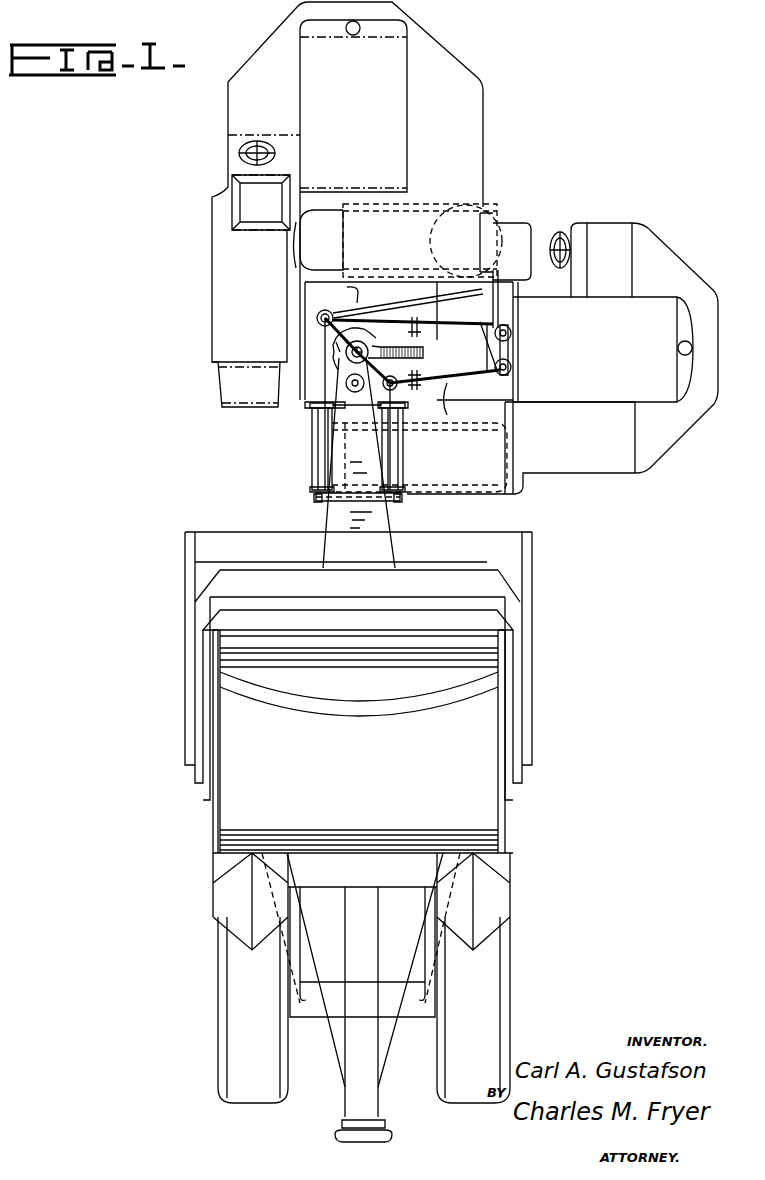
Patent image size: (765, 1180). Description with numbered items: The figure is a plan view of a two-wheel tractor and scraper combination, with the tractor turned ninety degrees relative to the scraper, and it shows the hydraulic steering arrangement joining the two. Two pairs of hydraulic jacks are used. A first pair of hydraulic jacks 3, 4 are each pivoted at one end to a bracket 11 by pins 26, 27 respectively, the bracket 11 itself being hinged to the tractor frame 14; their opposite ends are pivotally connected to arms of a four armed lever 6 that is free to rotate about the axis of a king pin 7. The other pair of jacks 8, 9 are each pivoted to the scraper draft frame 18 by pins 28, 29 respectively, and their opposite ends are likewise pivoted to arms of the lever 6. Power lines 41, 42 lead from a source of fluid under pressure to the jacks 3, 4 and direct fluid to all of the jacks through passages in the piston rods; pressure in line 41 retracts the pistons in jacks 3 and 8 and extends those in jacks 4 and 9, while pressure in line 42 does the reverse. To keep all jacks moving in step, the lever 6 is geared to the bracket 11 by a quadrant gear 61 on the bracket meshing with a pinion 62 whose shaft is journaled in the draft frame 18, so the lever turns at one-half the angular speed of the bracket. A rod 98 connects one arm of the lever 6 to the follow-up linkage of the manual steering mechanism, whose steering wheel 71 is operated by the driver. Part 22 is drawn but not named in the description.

The hydraulic jack 3 is at (483, 378).
The hydraulic jack 4 is at (444, 303).
The four armed lever 6 is at (330, 310).
The king pin 7 is at (345, 350).
The hydraulic jack 8 is at (388, 463).
The hydraulic jack 9 is at (323, 450).
The bracket 11 is at (466, 370).
The tractor frame 14 is at (347, 287).
The draft connection 18 is at (368, 562).
The cylinder housing 22 is at (318, 228).
The pin 26 is at (511, 368).
The pin 27 is at (511, 336).
The pin 28 is at (398, 505).
The pin 29 is at (318, 501).
The power line 41 is at (496, 300).
The power line 42 is at (500, 312).
The quadrant gear 61 is at (338, 356).
The pinion 62 is at (356, 388).
The steering wheel 71 is at (562, 233).
The rod 98 is at (390, 297).